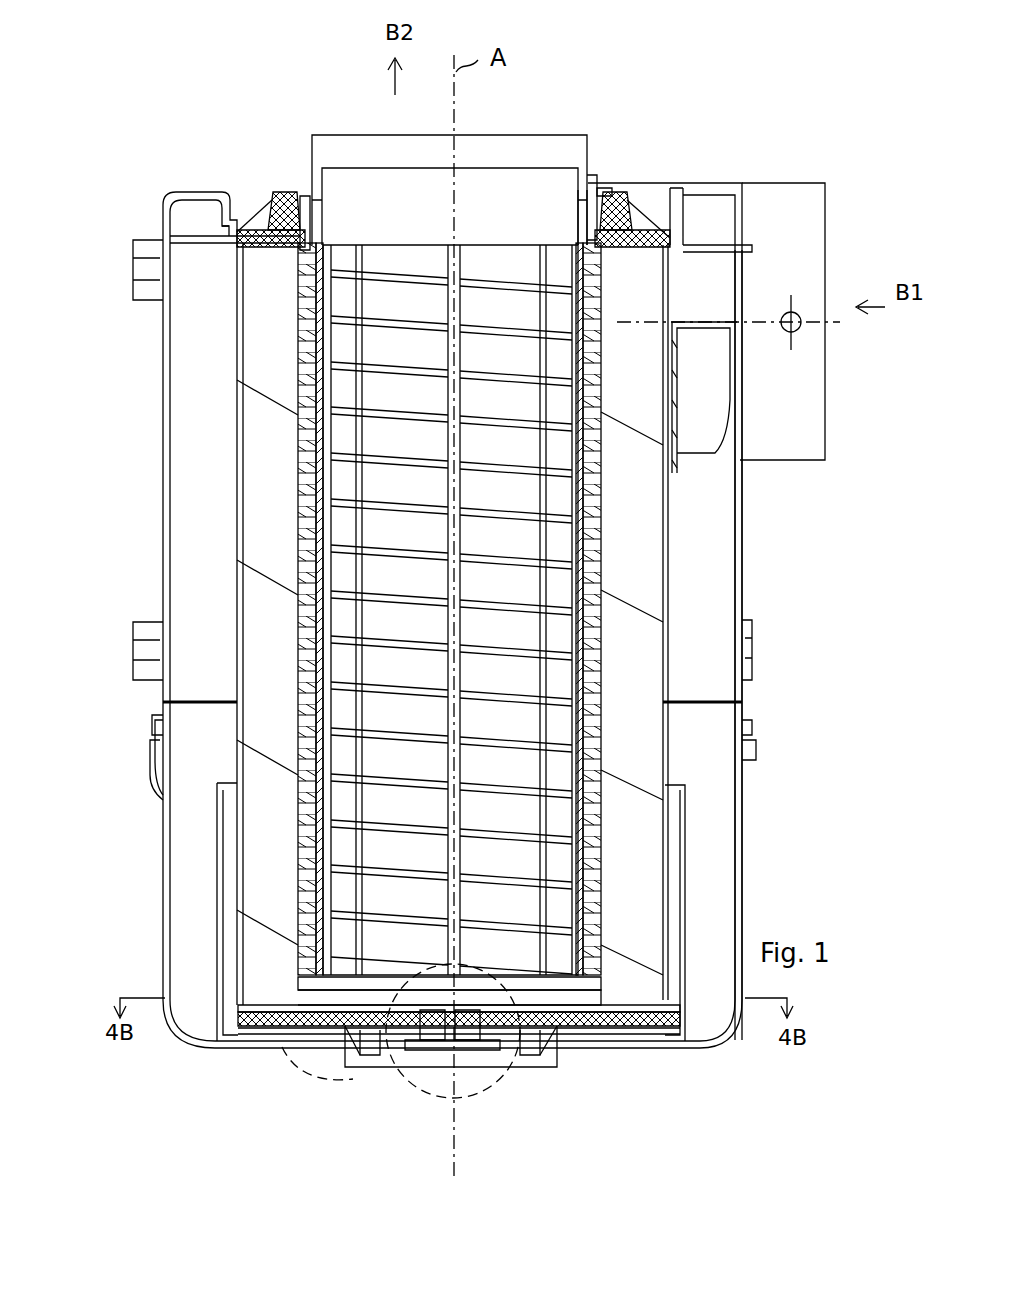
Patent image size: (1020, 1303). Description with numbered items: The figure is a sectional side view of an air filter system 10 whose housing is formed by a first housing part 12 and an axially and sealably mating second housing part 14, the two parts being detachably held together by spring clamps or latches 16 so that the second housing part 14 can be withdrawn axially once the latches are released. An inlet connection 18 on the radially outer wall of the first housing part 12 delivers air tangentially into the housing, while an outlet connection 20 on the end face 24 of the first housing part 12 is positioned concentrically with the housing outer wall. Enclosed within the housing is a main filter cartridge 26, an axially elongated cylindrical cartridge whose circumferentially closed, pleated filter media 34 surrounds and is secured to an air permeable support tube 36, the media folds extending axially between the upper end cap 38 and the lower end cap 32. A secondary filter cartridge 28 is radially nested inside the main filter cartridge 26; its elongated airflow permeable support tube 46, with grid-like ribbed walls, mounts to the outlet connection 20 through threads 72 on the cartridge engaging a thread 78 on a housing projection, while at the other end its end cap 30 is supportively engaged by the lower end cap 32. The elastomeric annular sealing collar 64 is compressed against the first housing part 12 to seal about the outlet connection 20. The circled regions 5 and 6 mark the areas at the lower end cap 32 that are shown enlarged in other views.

The enlarged view region 5 is at (493, 1088).
The enlarged view region 6 is at (296, 1086).
The air filter system 10 is at (108, 174).
The first housing part 12 is at (165, 440).
The second housing part 14 is at (165, 892).
The spring clamps or latches 16 is at (160, 764).
The inlet connection 18 is at (820, 185).
The outlet connection 20 is at (598, 140).
The end face 24 is at (280, 190).
The main filter cartridge 26 is at (665, 576).
The secondary filter cartridge 28 is at (585, 750).
The end cap of the secondary filter cartridge 30 is at (530, 1020).
The lower end cap 32 is at (668, 985).
The filter media 34 is at (656, 535).
The air permeable support tube 36 is at (665, 460).
The upper end cap 38 is at (660, 240).
The support tube 46 is at (587, 235).
The elastomeric annular sealing collar 64 is at (618, 205).
The threads 72 is at (587, 185).
The thread 78 is at (578, 240).